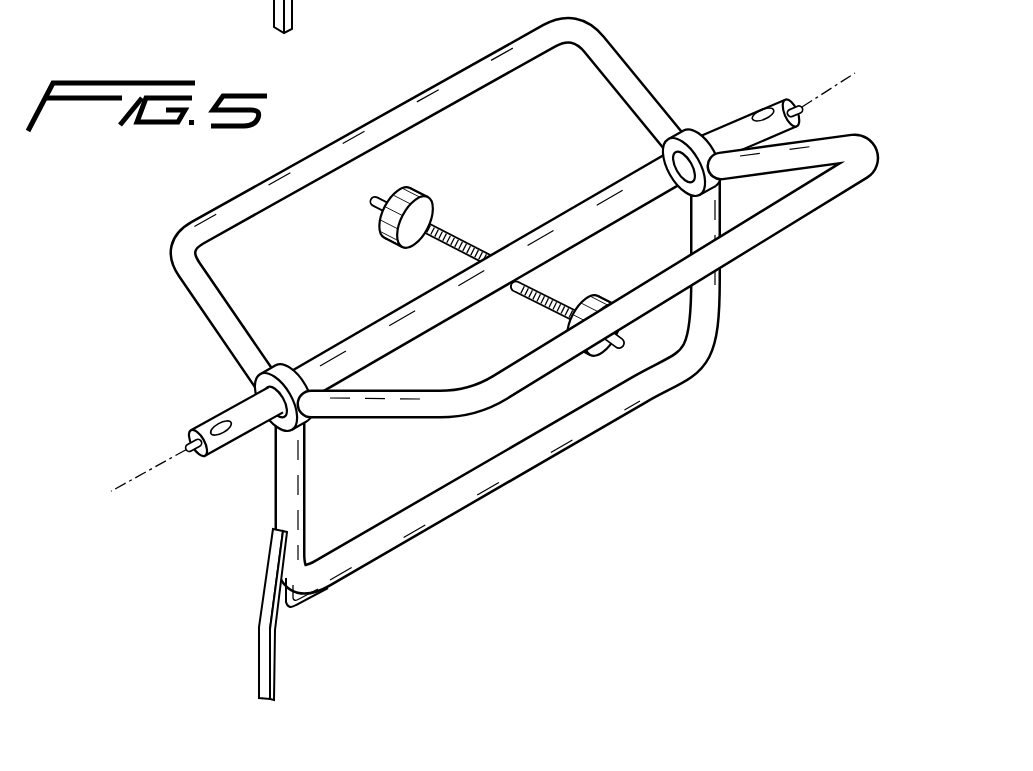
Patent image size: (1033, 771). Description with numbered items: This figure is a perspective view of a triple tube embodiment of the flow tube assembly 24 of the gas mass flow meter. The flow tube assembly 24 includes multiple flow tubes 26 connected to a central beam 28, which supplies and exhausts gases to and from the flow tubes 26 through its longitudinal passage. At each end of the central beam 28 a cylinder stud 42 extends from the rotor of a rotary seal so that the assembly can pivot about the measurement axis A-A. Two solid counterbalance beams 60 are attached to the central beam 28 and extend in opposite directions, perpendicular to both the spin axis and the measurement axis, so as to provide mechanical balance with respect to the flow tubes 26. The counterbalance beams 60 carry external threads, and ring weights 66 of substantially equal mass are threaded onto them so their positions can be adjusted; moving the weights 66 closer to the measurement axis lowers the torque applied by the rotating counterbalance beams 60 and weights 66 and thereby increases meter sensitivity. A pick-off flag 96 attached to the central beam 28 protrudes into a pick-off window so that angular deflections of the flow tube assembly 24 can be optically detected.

The flow tube assembly 24 is at (484, 350).
The flow tube 26 is at (484, 290).
The central beam 28 is at (580, 204).
The cylinder stud 42 is at (792, 100).
The counterbalance beam 60 is at (455, 236).
The weight 66 is at (414, 202).
The pick-off flag 96 is at (258, 636).